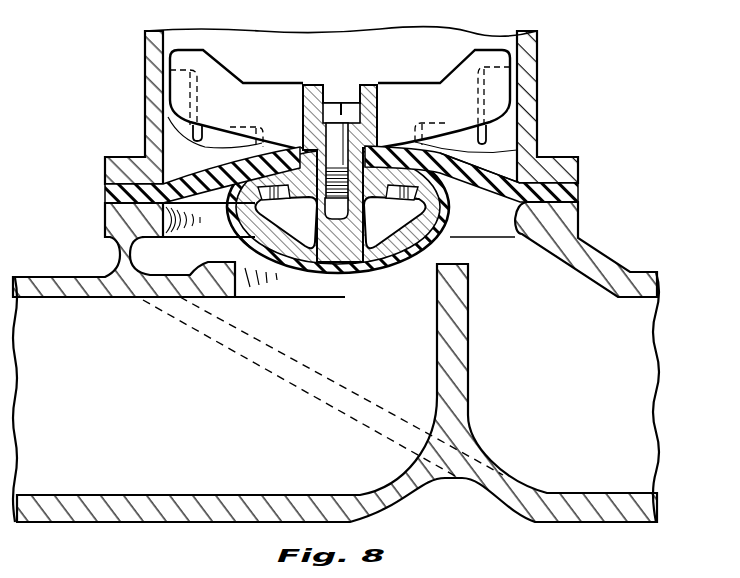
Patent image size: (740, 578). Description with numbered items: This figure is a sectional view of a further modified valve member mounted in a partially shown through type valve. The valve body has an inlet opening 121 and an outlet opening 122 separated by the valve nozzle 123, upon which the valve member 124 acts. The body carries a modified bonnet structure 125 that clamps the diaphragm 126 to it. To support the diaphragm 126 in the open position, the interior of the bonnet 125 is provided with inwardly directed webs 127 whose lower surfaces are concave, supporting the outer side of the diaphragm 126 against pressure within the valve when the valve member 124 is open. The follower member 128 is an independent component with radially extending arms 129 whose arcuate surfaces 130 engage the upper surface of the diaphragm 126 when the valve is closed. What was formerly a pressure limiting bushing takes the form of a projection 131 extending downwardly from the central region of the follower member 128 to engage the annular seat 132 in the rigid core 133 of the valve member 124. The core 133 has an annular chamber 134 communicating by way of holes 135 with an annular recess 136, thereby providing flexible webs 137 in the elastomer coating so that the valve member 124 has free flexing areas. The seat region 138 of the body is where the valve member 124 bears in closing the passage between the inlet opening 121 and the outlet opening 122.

The inlet opening 121 is at (52, 317).
The outlet opening 122 is at (633, 478).
The valve nozzle 123 is at (458, 271).
The valve member 124 is at (375, 279).
The bonnet structure 125 is at (546, 105).
The diaphragm 126 is at (578, 193).
The inwardly directed webs 127 is at (503, 140).
The follower member 128 is at (433, 55).
The radially extending arms 129 is at (177, 85).
The arcuate surfaces 130 is at (168, 139).
The projection 131 is at (358, 147).
The annular seat 132 is at (286, 222).
The rigid core 133 is at (347, 262).
The annular chamber 134 is at (402, 227).
The holes 135 is at (260, 202).
The annular recess 136 is at (240, 237).
The flexible webs 137 is at (435, 173).
The valve seat 138 is at (302, 262).